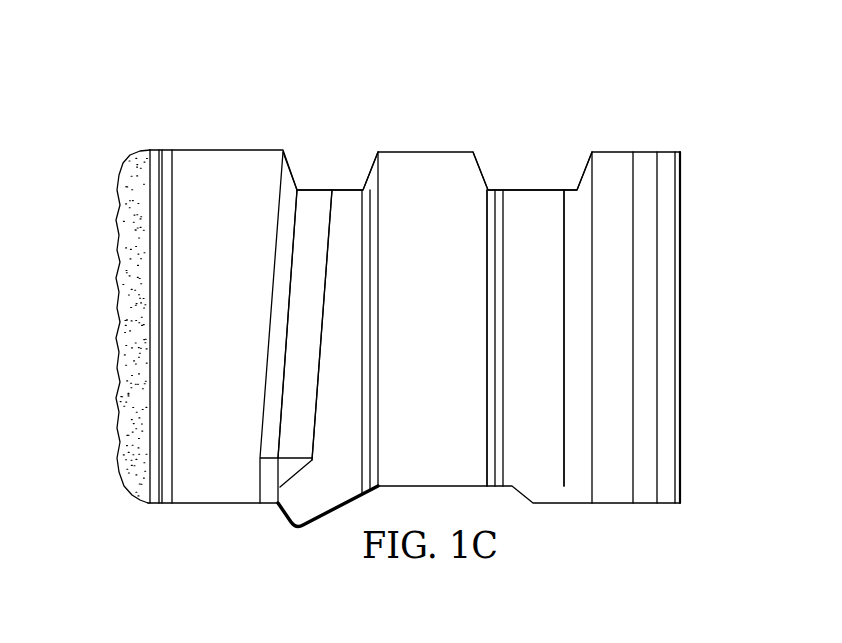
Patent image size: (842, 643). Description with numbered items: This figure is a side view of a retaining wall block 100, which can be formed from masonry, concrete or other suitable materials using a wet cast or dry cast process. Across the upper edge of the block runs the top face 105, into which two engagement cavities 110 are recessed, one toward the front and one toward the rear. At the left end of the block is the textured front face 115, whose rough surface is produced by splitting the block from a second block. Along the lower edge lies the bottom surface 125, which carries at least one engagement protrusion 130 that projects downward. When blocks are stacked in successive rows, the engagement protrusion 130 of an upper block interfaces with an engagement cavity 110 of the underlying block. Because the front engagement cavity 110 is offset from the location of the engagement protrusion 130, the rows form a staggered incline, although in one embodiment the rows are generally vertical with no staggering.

The retaining wall block 100 is at (365, 297).
The top face 105 is at (218, 150).
The engagement cavity 110 is at (320, 190).
The textured front face 115 is at (117, 340).
The bottom surface 125 is at (207, 505).
The engagement protrusion 130 is at (288, 525).